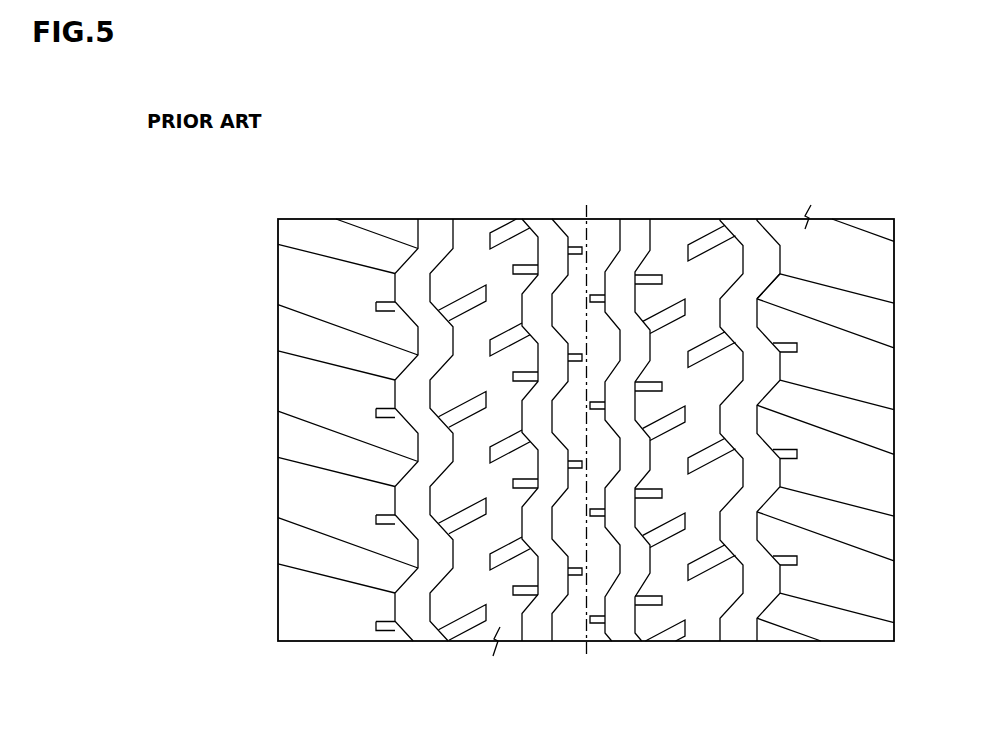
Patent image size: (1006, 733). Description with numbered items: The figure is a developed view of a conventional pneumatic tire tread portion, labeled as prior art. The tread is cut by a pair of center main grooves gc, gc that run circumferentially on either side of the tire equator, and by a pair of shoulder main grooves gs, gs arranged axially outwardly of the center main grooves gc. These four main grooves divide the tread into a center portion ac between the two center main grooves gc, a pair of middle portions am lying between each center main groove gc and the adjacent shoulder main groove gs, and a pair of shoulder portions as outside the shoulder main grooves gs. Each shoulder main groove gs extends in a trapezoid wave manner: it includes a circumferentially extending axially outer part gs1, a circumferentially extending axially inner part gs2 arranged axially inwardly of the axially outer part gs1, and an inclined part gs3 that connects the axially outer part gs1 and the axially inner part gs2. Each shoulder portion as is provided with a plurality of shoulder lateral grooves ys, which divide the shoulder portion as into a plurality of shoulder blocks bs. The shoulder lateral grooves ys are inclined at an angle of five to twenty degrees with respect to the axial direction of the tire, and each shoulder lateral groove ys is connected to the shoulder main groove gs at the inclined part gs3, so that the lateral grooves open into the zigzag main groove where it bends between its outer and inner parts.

The shoulder main groove gs is at (695, 392).
The center main groove gc is at (543, 229).
The axially outer part gs1 is at (782, 270).
The axially inner part gs2 is at (760, 326).
The inclined part gs3 is at (773, 289).
The shoulder lateral groove ys is at (872, 330).
The shoulder block bs is at (823, 371).
The shoulder portion as is at (278, 652).
The middle portion am is at (443, 652).
The center portion ac is at (550, 652).